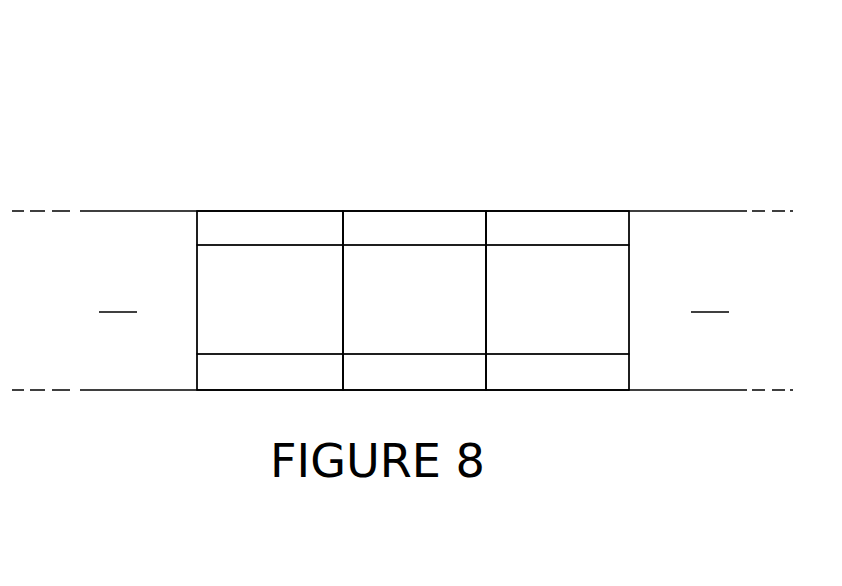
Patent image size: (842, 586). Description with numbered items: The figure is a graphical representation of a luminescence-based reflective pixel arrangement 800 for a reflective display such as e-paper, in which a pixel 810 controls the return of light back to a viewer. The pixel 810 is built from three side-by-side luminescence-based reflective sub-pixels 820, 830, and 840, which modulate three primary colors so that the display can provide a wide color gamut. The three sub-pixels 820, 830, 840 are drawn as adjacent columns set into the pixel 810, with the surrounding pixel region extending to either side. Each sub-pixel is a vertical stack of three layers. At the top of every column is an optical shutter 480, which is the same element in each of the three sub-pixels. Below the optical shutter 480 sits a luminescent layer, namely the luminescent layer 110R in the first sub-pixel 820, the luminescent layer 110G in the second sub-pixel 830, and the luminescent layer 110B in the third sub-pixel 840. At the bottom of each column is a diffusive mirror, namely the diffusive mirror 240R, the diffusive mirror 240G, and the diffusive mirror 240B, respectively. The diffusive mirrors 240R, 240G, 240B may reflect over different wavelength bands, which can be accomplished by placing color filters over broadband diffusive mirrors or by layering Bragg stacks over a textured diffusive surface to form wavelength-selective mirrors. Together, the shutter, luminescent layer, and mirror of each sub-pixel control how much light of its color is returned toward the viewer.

The display device 800 is at (293, 75).
The pixel 810 is at (375, 122).
The sub-pixel 820 is at (269, 192).
The sub-pixel 830 is at (413, 192).
The sub-pixel 840 is at (557, 193).
The optical shutter 480 is at (251, 238).
The luminescent layer 110R is at (242, 313).
The luminescent layer 110G is at (385, 313).
The luminescent layer 110B is at (530, 313).
The diffusive mirror 240R is at (242, 385).
The diffusive mirror 240G is at (385, 385).
The diffusive mirror 240B is at (530, 385).